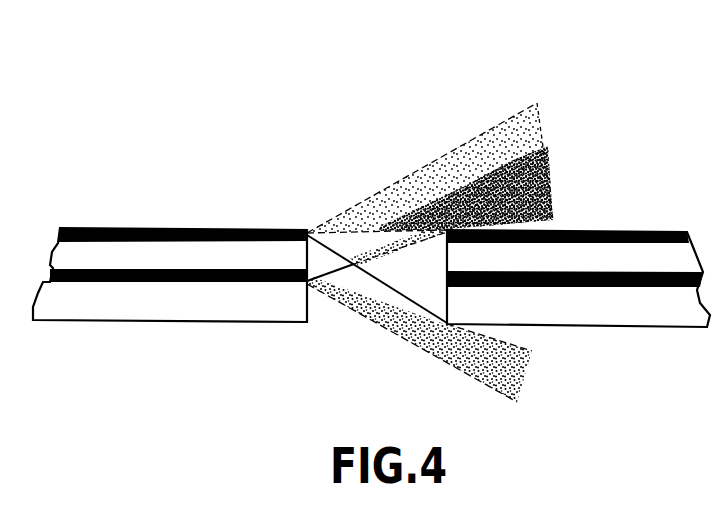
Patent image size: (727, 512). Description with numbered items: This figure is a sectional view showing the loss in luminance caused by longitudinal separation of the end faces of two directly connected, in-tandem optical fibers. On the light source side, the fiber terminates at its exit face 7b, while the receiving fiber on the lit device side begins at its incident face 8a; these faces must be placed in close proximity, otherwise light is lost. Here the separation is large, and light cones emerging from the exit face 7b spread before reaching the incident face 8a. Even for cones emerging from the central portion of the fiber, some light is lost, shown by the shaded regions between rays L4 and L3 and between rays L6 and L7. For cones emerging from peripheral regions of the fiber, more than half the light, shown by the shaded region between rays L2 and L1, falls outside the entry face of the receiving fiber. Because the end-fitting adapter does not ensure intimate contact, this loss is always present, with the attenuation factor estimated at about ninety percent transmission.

The exit face 7b is at (308, 231).
The incident face 8a is at (442, 245).
The ray L1 is at (443, 150).
The ray L2 is at (557, 222).
The ray L3 is at (490, 167).
The ray L4 is at (486, 188).
The ray L6 is at (440, 338).
The ray L7 is at (432, 360).